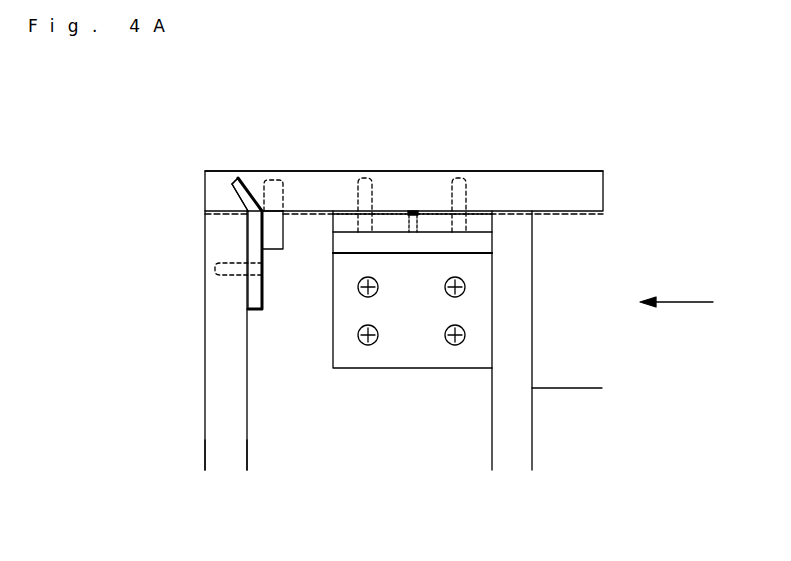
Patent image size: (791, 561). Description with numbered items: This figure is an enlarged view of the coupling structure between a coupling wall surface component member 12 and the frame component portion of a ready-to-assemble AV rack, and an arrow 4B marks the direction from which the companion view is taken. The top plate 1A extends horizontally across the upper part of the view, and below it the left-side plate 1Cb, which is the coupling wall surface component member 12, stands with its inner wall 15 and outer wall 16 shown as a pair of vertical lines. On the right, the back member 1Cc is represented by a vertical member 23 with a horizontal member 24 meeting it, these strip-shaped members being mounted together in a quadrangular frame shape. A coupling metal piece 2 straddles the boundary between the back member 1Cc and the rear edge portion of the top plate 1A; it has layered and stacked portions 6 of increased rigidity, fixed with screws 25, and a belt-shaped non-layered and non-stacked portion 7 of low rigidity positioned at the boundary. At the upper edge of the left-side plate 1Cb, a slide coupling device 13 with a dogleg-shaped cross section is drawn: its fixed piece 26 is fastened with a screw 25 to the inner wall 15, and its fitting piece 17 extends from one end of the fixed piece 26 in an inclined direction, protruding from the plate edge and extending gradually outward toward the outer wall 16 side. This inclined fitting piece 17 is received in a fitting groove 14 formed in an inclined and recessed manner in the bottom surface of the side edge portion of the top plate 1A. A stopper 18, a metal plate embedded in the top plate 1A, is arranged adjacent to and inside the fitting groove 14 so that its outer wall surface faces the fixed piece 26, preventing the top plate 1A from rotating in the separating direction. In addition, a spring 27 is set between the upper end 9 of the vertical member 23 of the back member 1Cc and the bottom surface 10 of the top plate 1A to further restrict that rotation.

The top plate 1A is at (594, 172).
The coupling metal piece 2 is at (386, 355).
The layered and stacked portions 6 is at (480, 212).
The non-layered and non-stacked portion 7 is at (485, 247).
The upper end 9 is at (557, 212).
The bottom surface 10 is at (586, 214).
The coupling wall surface component member 12 is at (167, 340).
The left-side plate 1Cb is at (212, 403).
The slide coupling device 13 is at (180, 247).
The fixed piece 26 is at (253, 298).
The fitting groove 14 is at (250, 183).
The inner wall 15 is at (249, 458).
The outer wall 16 is at (205, 458).
The fitting piece 17 is at (234, 193).
The stopper 18 is at (273, 226).
The vertical member 23 is at (517, 445).
The back member 1Cc is at (560, 357).
The horizontal member 24 is at (583, 380).
The screw 25 is at (363, 178).
The spring 27 is at (413, 211).
The arrow 4B is at (676, 292).